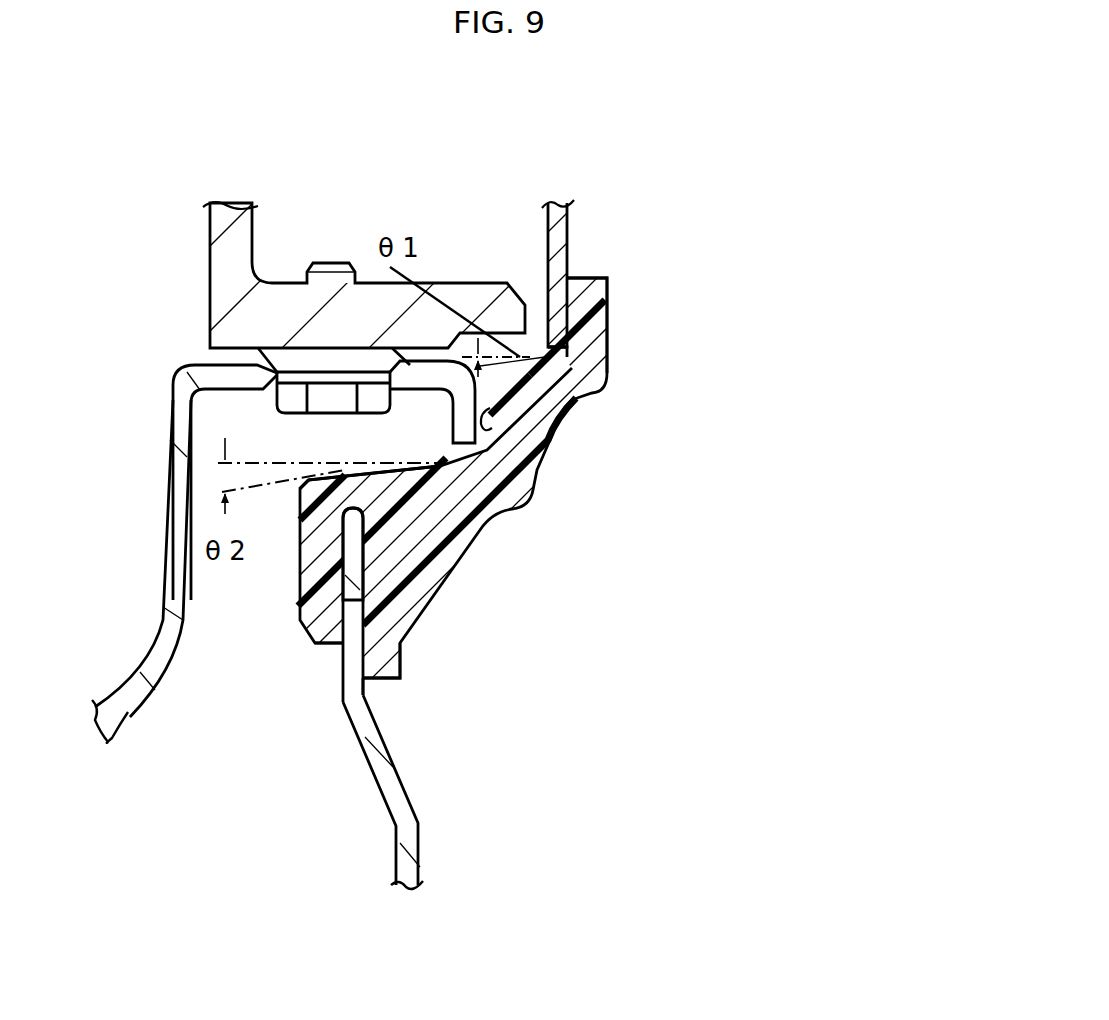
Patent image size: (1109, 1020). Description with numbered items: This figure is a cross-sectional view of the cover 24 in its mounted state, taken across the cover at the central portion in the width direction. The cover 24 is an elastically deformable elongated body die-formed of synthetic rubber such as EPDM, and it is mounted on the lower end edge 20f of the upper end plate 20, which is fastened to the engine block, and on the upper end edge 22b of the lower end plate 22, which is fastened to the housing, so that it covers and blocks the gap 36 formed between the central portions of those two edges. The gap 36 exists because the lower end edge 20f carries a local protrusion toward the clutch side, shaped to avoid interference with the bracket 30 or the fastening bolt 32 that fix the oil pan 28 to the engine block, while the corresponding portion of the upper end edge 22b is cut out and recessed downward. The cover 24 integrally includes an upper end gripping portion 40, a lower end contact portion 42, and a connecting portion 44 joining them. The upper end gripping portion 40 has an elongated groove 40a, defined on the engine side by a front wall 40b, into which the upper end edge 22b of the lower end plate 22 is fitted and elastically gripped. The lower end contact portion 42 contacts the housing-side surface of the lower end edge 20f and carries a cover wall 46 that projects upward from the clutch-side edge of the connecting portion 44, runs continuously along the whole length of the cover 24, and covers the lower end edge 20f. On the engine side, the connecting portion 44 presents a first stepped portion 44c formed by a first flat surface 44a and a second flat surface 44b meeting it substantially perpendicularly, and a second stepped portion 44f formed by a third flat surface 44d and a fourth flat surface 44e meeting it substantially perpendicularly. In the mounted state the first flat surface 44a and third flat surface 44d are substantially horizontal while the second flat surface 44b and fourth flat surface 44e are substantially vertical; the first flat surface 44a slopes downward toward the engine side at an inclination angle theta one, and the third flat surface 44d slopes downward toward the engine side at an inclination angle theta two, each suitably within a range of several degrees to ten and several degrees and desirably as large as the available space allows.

The upper end plate 20 is at (560, 211).
The lower end edge 20f is at (605, 372).
The lower end plate 22 is at (440, 698).
The upper end edge 22b is at (353, 575).
The cover 24 is at (630, 748).
The oil pan 28 is at (118, 712).
The bracket 30 is at (223, 273).
The fastening bolt 32 is at (290, 395).
The gap 36 is at (505, 450).
The upper end gripping portion 40 is at (394, 709).
The groove 40a is at (352, 666).
The front wall 40b is at (313, 622).
The lower end contact portion 42 is at (655, 350).
The connecting portion 44 is at (446, 374).
The first flat surface 44a is at (515, 353).
The second flat surface 44b is at (495, 413).
The first stepped portion 44c is at (504, 345).
The third flat surface 44d is at (330, 465).
The fourth flat surface 44e is at (297, 515).
The second stepped portion 44f is at (317, 452).
The cover wall 46 is at (606, 289).